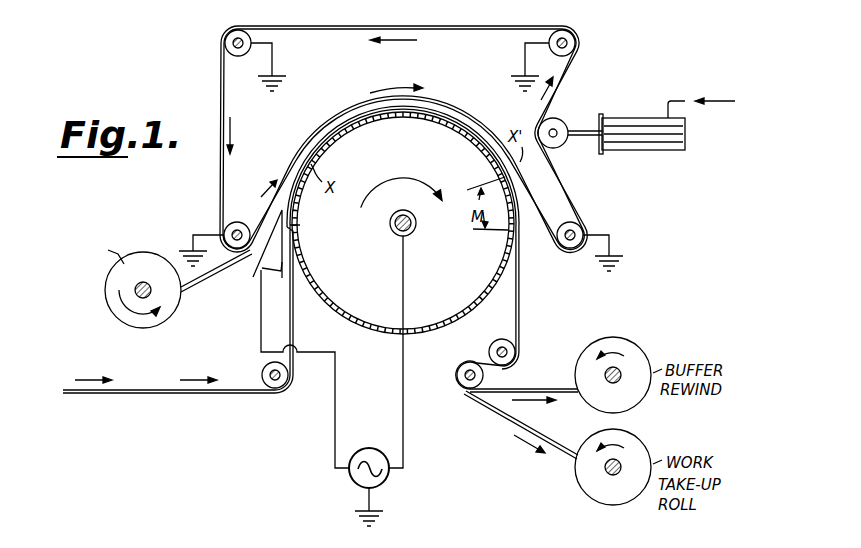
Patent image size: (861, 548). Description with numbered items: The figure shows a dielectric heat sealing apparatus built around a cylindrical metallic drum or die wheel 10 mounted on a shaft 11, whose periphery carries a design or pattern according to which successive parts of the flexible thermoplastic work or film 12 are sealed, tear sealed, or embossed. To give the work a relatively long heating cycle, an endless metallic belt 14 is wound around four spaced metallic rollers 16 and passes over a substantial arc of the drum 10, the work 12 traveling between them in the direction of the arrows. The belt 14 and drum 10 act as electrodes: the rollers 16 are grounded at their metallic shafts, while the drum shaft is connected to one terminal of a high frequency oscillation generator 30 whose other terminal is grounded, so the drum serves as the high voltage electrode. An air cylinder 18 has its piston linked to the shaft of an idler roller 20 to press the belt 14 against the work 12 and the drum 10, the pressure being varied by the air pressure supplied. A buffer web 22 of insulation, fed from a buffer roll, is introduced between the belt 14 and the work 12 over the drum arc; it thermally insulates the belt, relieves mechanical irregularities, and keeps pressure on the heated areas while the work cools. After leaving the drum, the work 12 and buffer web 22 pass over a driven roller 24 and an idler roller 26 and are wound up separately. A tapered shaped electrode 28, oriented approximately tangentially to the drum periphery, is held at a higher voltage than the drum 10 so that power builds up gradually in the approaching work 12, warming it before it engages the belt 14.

The drum or die wheel 10 is at (455, 282).
The shaft 11 is at (391, 223).
The work or film 12 is at (152, 387).
The endless metallic belt 14 is at (371, 26).
The rollers 16 is at (240, 58).
The air cylinder 18 is at (631, 118).
The idler roller 20 is at (561, 121).
The buffer web 22 is at (208, 285).
The driven roller 24 is at (503, 340).
The idler roller 26 is at (464, 366).
The shaped electrode 28 is at (259, 272).
The high frequency oscillation generator 30 is at (352, 476).